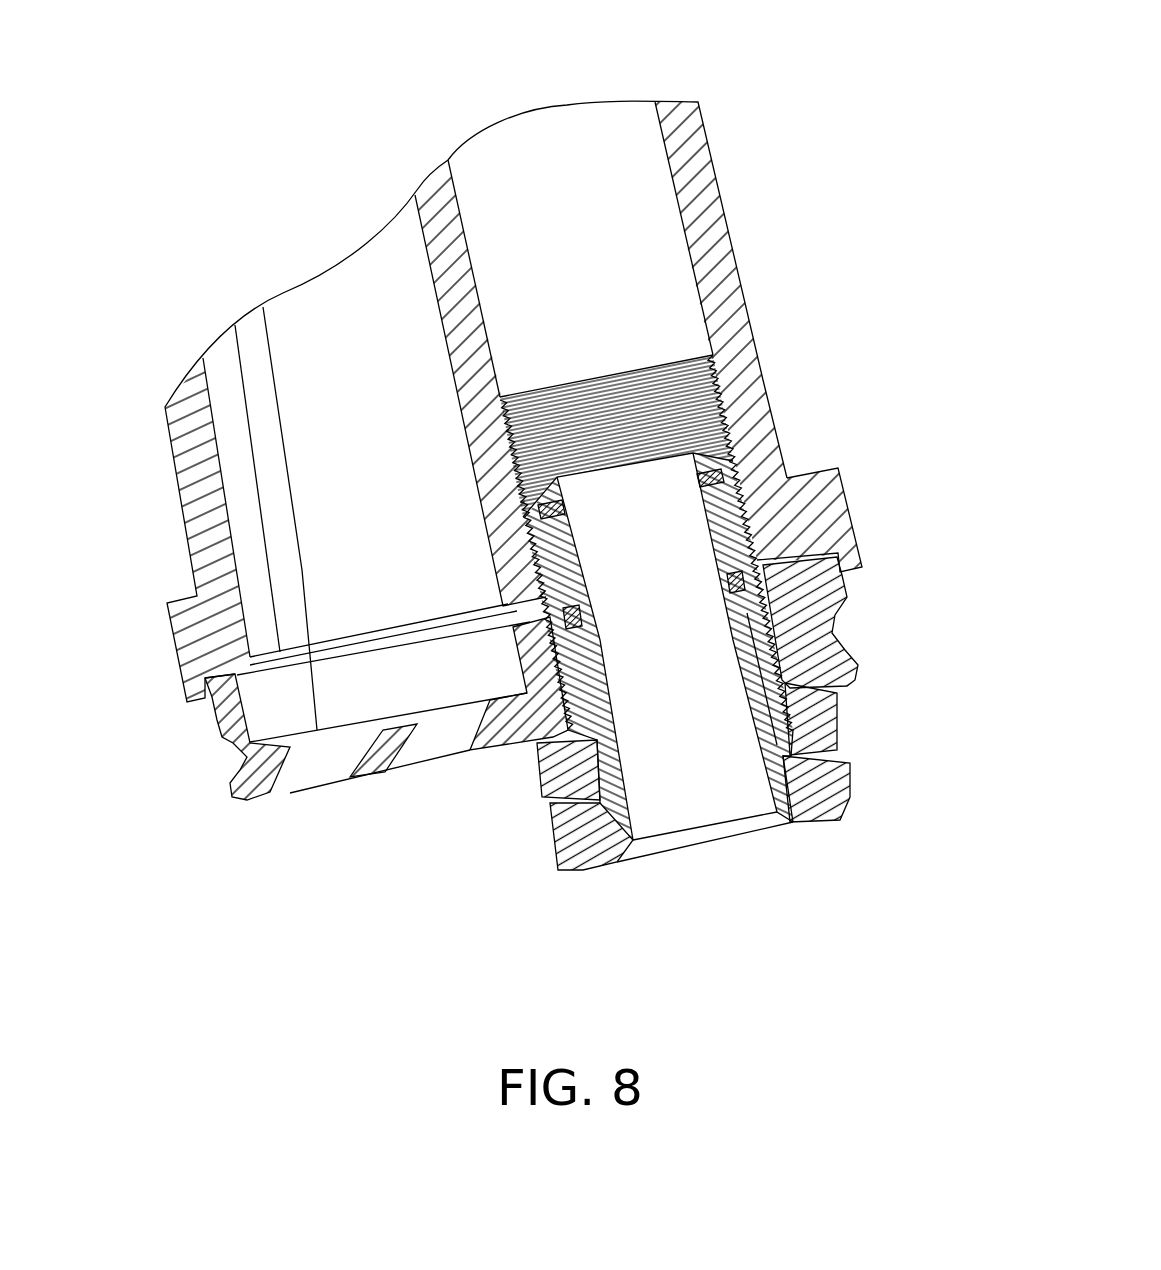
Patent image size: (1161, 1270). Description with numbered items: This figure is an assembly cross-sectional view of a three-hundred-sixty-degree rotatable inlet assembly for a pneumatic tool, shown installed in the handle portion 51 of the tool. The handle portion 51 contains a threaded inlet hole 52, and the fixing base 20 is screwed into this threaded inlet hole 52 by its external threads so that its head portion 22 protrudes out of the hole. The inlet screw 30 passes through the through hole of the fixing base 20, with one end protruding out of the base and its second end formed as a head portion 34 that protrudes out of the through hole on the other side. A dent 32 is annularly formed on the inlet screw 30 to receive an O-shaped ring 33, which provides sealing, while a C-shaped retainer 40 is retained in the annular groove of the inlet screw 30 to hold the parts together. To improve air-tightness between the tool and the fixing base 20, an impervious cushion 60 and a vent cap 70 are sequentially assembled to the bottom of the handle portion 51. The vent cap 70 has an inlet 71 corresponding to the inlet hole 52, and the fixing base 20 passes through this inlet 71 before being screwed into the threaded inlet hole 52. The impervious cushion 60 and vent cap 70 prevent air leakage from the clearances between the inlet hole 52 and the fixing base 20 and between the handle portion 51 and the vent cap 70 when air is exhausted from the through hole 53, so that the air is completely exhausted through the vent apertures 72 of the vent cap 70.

The fixing base 20 is at (528, 776).
The head portion 22 is at (845, 722).
The inlet screw 30 is at (558, 870).
The dent 32 is at (542, 586).
The O-shaped ring 33 is at (793, 530).
The head portion 34 is at (848, 797).
The C-shaped retainer 40 is at (730, 452).
The handle portion 51 is at (705, 205).
The threaded inlet hole 52 is at (613, 175).
The through hole 53 is at (307, 332).
The impervious cushion 60 is at (203, 678).
The vent cap 70 is at (217, 720).
The inlet 71 is at (770, 597).
The vent apertures 72 is at (443, 730).